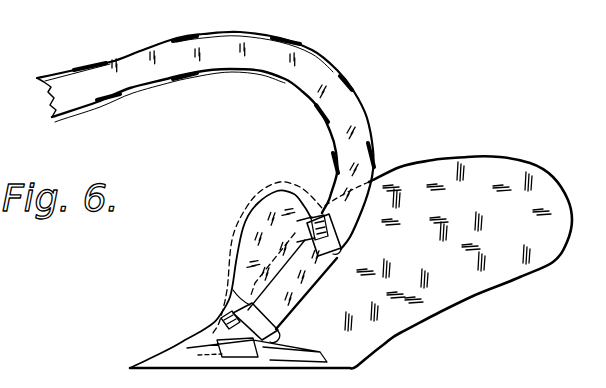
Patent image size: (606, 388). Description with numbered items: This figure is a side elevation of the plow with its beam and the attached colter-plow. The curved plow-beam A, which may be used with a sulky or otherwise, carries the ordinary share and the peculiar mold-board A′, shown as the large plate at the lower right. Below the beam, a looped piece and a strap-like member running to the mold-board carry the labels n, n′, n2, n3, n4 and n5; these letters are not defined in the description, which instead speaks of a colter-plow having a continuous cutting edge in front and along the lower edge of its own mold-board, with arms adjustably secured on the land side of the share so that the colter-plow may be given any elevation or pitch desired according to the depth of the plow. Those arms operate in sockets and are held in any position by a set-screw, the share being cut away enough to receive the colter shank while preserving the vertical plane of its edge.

The plow-beam A is at (205, 136).
The mold-board A′ is at (429, 244).
The ring n is at (232, 252).
The strap n′ is at (296, 221).
The upper buckle n2 is at (324, 235).
The lower buckle n3 is at (250, 323).
The clasp tab n4 is at (328, 220).
The fastening plate n5 is at (312, 355).